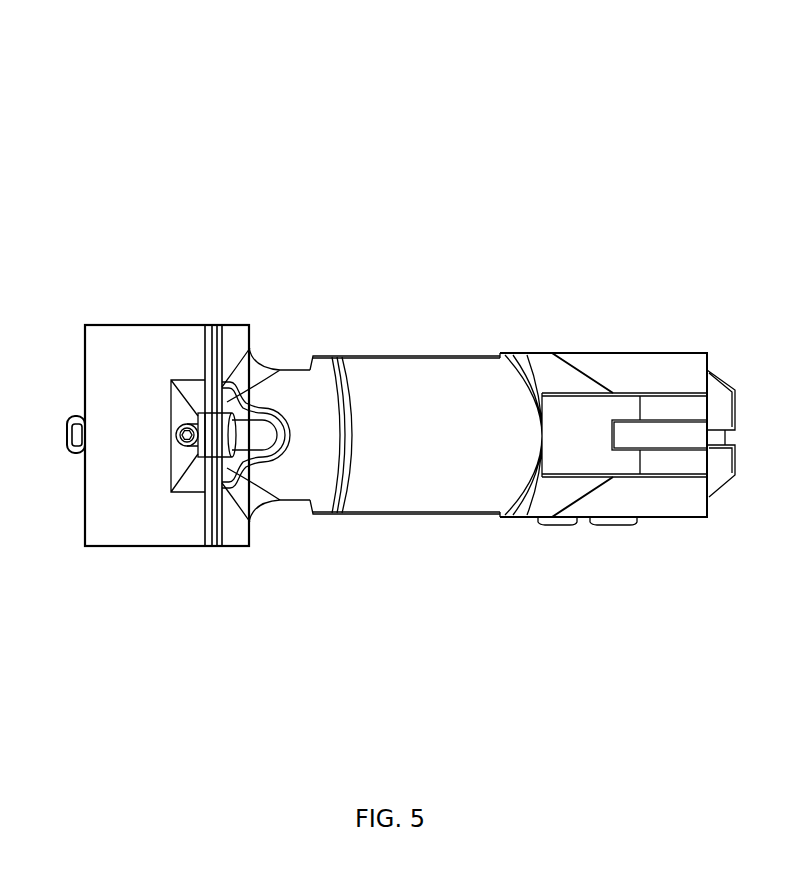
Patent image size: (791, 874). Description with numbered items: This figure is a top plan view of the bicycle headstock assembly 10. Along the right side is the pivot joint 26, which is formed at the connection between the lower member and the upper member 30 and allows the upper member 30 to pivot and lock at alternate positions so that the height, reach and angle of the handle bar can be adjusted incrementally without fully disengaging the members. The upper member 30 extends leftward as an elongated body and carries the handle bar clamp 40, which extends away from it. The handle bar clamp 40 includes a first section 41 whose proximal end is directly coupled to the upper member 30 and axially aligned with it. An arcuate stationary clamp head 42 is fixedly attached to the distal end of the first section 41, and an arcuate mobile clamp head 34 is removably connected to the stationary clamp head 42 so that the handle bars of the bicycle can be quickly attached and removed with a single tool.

The bicycle headstock assembly 10 is at (438, 98).
The pivot joint 26 is at (685, 331).
The upper member 30 is at (479, 318).
The arcuate mobile clamp head 34 is at (140, 508).
The handle bar clamp 40 is at (135, 292).
The first section 41 is at (315, 472).
The arcuate stationary clamp head 42 is at (235, 530).